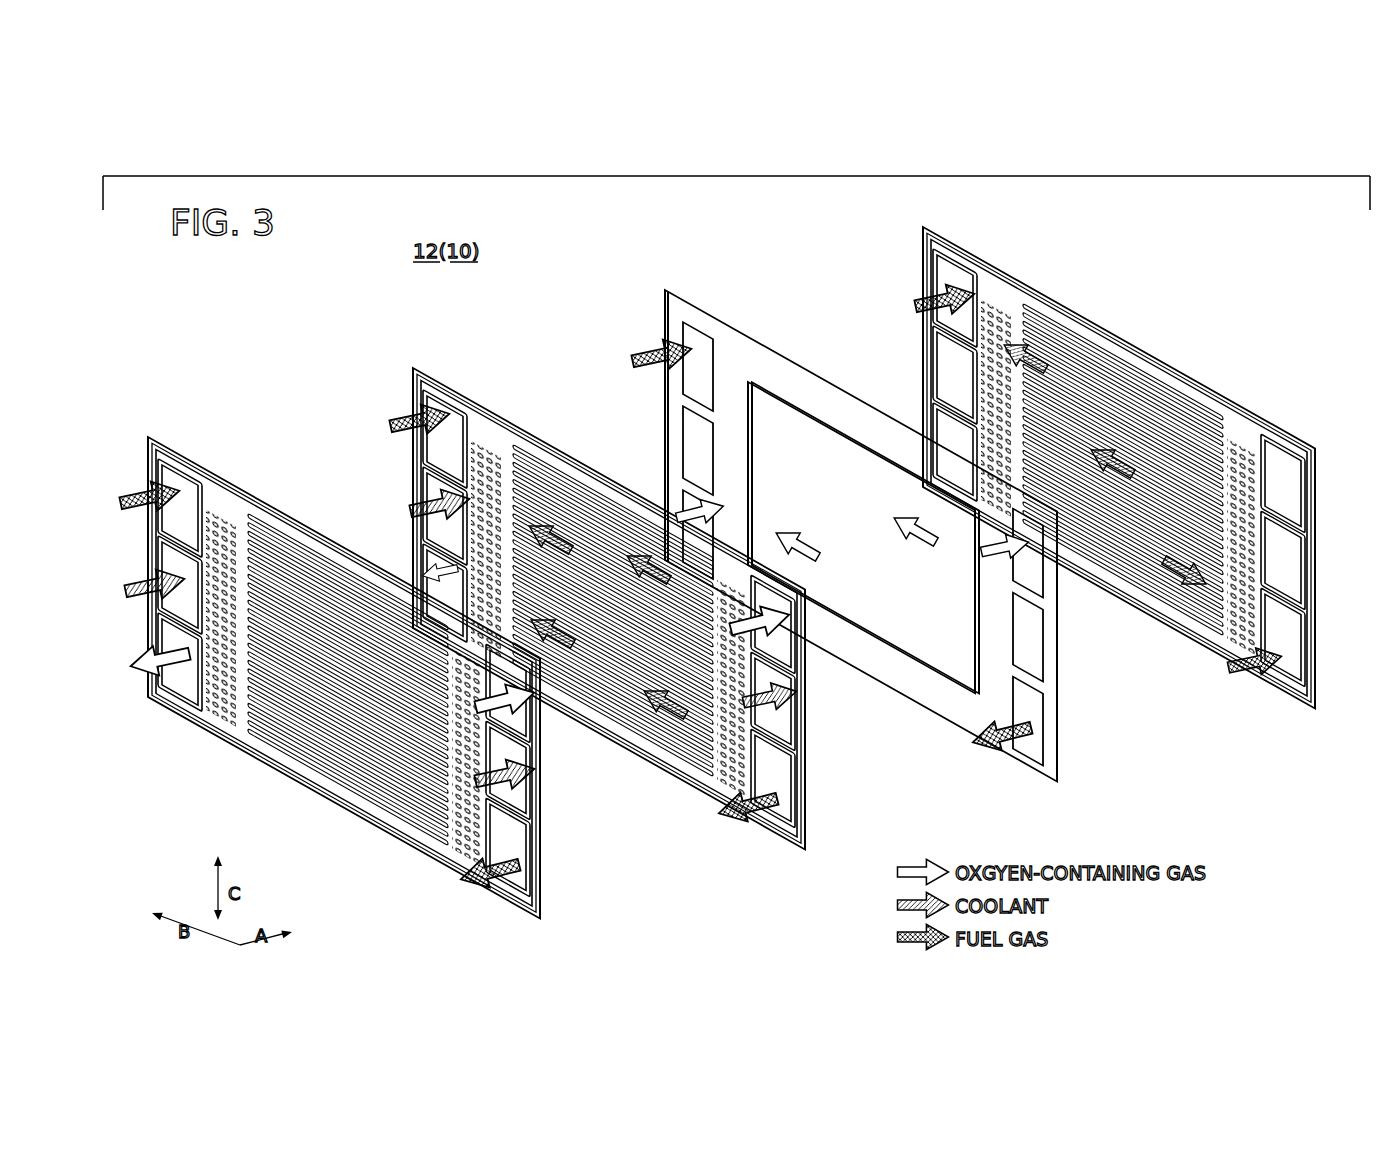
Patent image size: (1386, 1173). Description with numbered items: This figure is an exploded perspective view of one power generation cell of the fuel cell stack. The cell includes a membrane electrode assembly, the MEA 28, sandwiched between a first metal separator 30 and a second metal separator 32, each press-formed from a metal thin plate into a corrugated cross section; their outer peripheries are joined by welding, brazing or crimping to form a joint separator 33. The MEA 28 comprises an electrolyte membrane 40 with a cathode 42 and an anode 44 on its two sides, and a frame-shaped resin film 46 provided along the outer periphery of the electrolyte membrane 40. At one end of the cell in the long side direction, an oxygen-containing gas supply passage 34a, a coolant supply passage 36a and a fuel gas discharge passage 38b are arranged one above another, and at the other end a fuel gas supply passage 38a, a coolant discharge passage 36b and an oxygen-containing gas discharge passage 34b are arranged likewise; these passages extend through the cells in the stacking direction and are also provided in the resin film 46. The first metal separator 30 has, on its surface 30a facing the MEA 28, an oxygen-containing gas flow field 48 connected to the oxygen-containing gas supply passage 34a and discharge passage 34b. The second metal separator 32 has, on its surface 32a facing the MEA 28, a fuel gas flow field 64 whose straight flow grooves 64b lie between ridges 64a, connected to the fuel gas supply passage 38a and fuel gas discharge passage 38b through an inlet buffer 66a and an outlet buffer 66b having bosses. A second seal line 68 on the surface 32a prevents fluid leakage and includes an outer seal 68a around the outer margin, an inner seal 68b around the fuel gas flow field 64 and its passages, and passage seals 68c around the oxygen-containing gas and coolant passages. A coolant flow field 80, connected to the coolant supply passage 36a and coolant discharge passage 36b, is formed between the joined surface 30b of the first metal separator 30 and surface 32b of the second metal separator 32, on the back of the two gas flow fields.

The membrane electrode assembly 28 is at (658, 288).
The first metal separator 30 is at (412, 364).
The surface of first metal separator 30a is at (706, 770).
The surface of first metal separator 30b is at (672, 760).
The second metal separator 32 is at (148, 430).
The surface of second metal separator 32a is at (408, 820).
The surface of second metal separator 32b is at (440, 845).
The joint separator 33 is at (413, 305).
The oxygen-containing gas supply passage 34a is at (540, 735).
The oxygen-containing gas discharge passage 34b is at (183, 680).
The coolant supply passage 36a is at (538, 785).
The coolant discharge passage 36b is at (150, 665).
The fuel gas supply passage 38a is at (176, 482).
The fuel gas discharge passage 38b is at (527, 871).
The electrolyte membrane 40 is at (890, 636).
The cathode 42 is at (857, 628).
The anode 44 is at (982, 638).
The resin film 46 is at (923, 684).
The oxygen-containing gas flow field 48 is at (562, 490).
The fuel gas flow field 64 is at (300, 752).
The ridges 64a is at (1057, 345).
The straight flow grooves 64b is at (1070, 345).
The inlet buffer 66a is at (999, 305).
The outlet buffer 66b is at (1235, 440).
The second seal line 68 is at (272, 774).
The outer seal 68a is at (378, 815).
The inner seal 68b is at (352, 797).
The passage seals 68c is at (207, 686).
The coolant flow field 80 is at (524, 468).